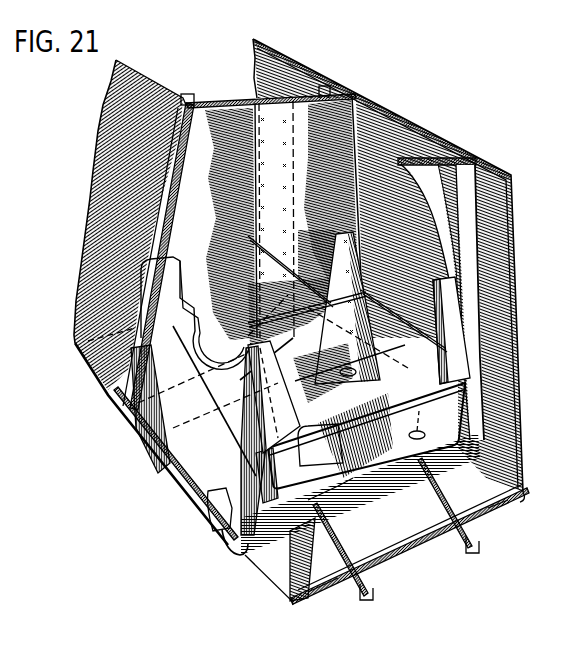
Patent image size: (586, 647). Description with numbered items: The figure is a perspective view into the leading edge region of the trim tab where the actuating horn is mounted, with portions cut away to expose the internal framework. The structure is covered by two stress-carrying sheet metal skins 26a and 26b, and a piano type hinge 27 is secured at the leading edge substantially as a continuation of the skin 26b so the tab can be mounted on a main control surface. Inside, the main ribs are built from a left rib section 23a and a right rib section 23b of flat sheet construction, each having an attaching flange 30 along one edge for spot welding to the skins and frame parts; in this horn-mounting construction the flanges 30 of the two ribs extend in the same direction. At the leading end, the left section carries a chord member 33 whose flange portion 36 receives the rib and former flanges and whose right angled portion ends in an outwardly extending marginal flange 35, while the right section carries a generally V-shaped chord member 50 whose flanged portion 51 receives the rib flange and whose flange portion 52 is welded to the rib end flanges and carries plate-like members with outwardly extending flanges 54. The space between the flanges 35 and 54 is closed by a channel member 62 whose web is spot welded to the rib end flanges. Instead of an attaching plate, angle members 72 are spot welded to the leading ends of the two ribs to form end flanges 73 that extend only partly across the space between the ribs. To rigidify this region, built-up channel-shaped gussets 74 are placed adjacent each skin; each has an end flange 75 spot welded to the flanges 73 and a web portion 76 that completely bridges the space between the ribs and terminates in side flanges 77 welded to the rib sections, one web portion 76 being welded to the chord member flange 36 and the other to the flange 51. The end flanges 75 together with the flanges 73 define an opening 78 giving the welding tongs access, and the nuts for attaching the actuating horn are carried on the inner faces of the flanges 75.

The skin 26b is at (82, 197).
The skin 26a is at (367, 100).
The left rib section 23a is at (320, 135).
The right rib section 23b is at (271, 212).
The attaching flange 30 is at (196, 78).
The web portion 76 is at (400, 280).
The side flange 77 is at (520, 344).
The channel-shaped gusset 74 is at (440, 310).
The opening 78 is at (296, 428).
The end flange 75 is at (360, 402).
The channel member 62 is at (403, 543).
The angle member 72 is at (348, 476).
The outwardly extending flange 54 is at (347, 596).
The marginal flange 35 is at (462, 534).
The flanged portion 51 is at (280, 582).
The chord member 50 is at (304, 598).
The flange portion 52 is at (326, 590).
The chord member 33 is at (493, 498).
The flange portion 36 is at (512, 492).
The end flange 73 is at (200, 493).
The piano type hinge 27 is at (218, 528).